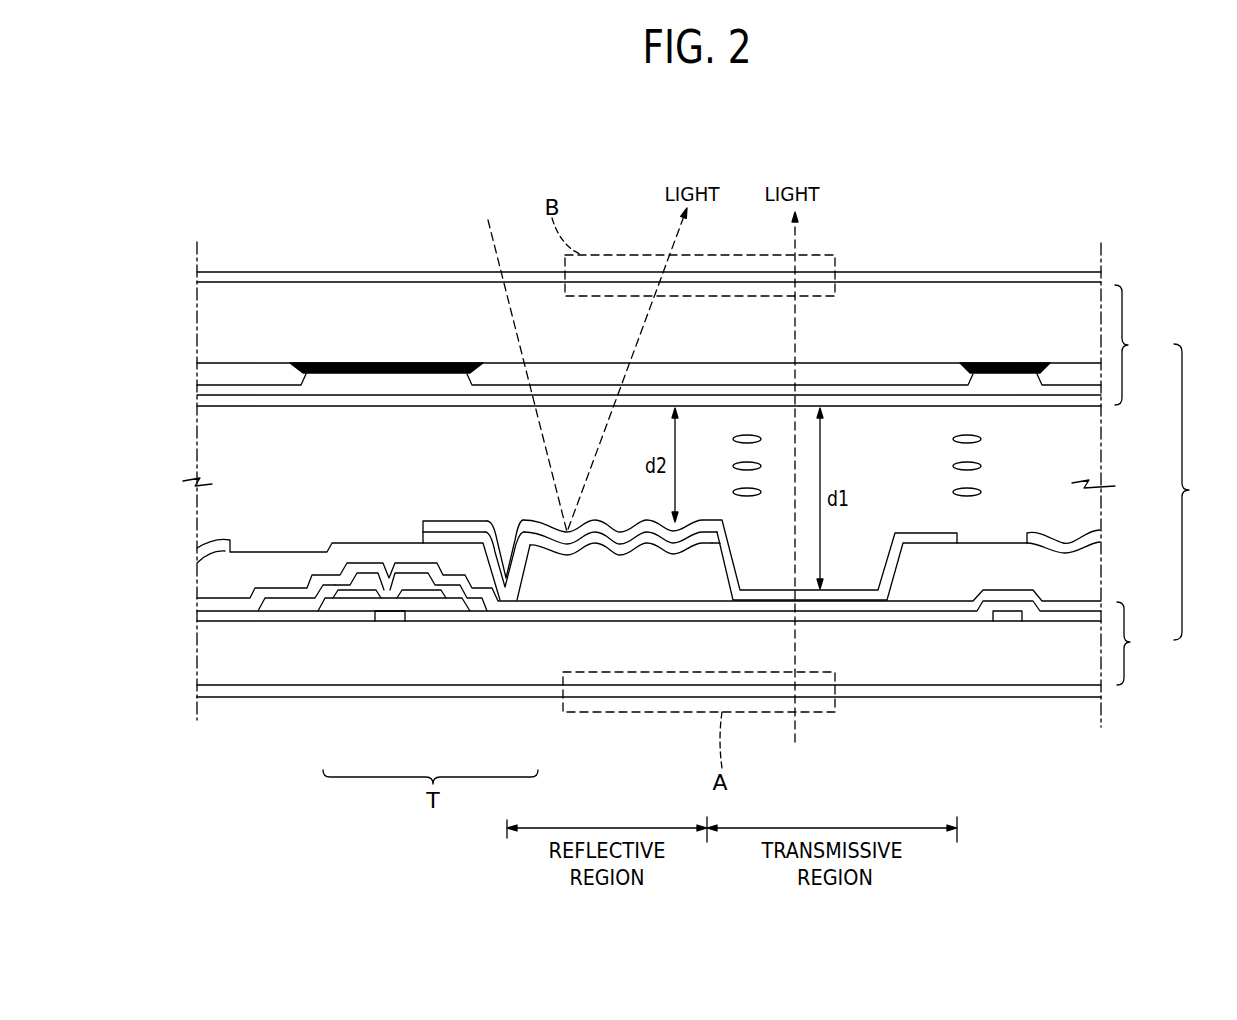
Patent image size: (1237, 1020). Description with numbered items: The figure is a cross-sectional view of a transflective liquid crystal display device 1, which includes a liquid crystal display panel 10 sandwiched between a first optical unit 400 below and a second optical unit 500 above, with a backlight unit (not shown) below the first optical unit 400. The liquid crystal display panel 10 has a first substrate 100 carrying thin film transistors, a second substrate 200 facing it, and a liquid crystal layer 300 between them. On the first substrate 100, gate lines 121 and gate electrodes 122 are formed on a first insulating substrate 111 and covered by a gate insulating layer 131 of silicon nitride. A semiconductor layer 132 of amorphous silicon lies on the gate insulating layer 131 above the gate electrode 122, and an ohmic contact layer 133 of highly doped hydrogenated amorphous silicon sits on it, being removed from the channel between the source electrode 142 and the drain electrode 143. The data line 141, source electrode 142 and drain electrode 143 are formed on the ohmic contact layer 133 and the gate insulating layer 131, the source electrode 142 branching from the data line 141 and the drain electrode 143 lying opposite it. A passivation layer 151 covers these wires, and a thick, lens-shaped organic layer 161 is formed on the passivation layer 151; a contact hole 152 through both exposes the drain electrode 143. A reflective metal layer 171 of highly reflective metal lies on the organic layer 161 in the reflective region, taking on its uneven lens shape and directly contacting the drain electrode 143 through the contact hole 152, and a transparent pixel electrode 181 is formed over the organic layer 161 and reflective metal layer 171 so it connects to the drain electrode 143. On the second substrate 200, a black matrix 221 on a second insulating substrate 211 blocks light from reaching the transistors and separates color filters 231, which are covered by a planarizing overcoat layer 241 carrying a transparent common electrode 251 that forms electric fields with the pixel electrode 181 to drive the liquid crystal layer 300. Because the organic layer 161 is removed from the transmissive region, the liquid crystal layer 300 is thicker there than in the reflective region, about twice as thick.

The liquid crystal display device 1 is at (241, 163).
The liquid crystal display panel 10 is at (1193, 492).
The first substrate 100 is at (1141, 643).
The second substrate 200 is at (1140, 345).
The liquid crystal layer 300 is at (1075, 512).
The first optical unit 400 is at (1085, 694).
The second optical unit 500 is at (1088, 278).
The first insulating substrate 111 is at (538, 668).
The gate line 121 is at (1007, 615).
The gate electrode 122 is at (392, 613).
The gate insulating layer 131 is at (946, 611).
The semiconductor layer 132 is at (366, 598).
The ohmic contact layer 133 is at (445, 596).
The data line 141 is at (262, 603).
The source electrode 142 is at (348, 590).
The drain electrode 143 is at (476, 604).
The passivation layer 151 is at (212, 600).
The contact hole 152 is at (505, 504).
The organic layer 161 is at (580, 583).
The reflective metal layer 171 is at (627, 547).
The pixel electrode 181 is at (838, 601).
The second insulating substrate 211 is at (408, 297).
The black matrix 221 is at (333, 362).
The color filter 231 is at (858, 375).
The overcoat layer 241 is at (1060, 388).
The common electrode 251 is at (912, 400).